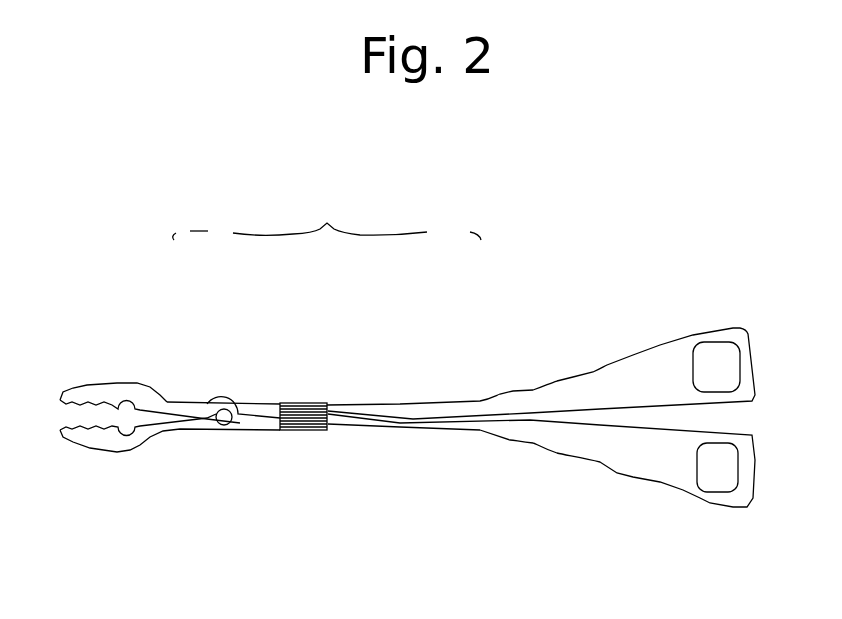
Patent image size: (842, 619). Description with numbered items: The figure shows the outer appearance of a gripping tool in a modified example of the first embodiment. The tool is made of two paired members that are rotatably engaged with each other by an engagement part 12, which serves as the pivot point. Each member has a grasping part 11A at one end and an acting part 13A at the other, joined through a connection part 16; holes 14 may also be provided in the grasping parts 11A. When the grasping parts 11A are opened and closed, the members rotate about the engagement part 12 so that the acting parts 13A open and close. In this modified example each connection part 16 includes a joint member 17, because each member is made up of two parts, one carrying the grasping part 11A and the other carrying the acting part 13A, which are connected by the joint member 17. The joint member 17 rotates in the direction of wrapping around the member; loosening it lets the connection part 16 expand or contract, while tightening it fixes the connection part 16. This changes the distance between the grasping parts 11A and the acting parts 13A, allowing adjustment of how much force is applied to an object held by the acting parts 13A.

The grasping part 11A is at (623, 476).
The engagement part 12 is at (221, 420).
The acting part 13A is at (117, 451).
The hole 14 is at (720, 474).
The connection part 16 is at (327, 220).
The joint member 17 is at (307, 432).